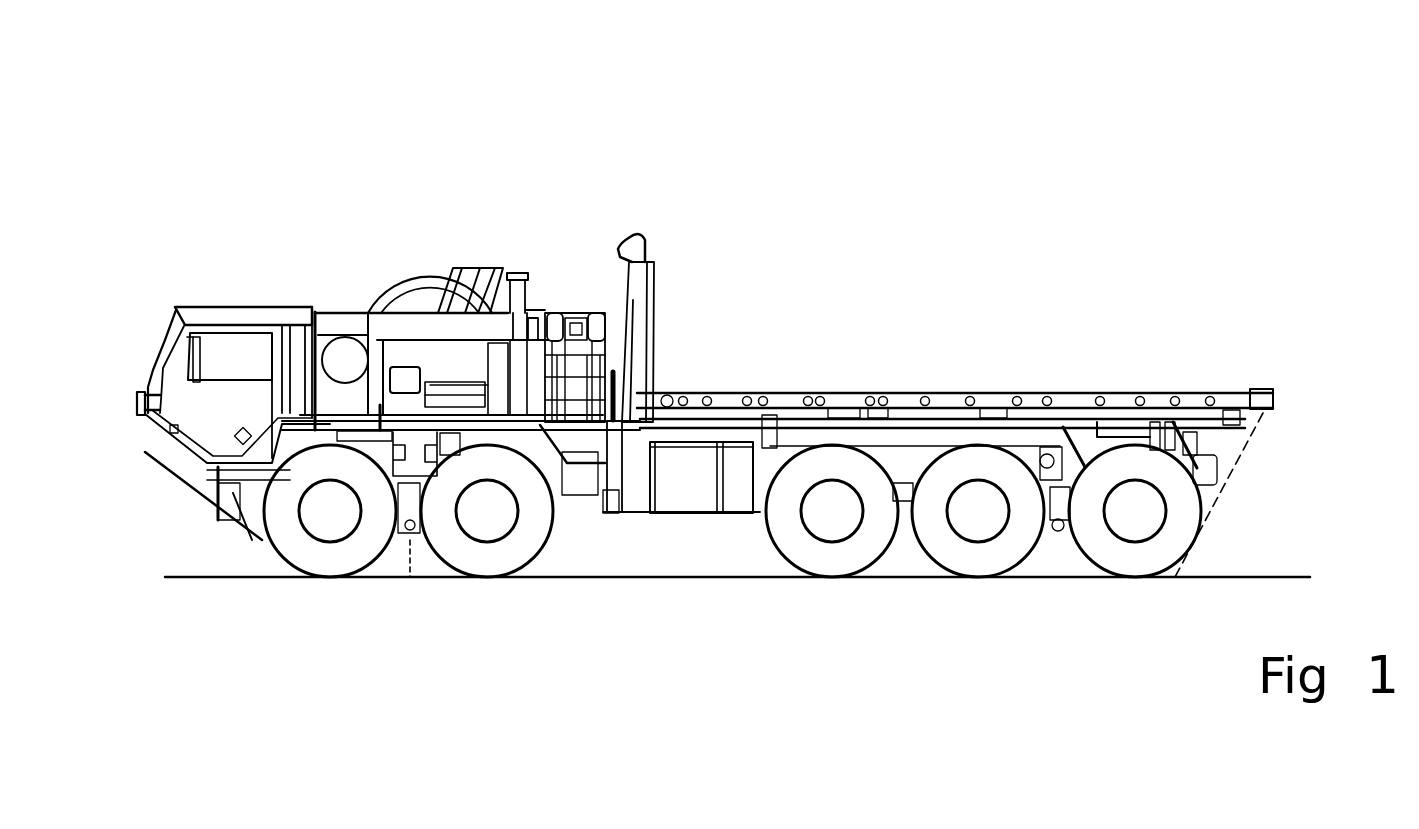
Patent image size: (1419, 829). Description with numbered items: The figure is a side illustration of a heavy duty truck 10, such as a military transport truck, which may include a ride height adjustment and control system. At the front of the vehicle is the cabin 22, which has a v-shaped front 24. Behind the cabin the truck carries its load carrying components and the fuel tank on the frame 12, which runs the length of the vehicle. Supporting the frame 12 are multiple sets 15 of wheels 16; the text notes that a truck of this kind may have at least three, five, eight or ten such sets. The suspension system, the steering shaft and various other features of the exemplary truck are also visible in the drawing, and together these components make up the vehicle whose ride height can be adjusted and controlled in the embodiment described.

The heavy duty truck 10 is at (553, 168).
The frame 12 is at (1117, 428).
The sets of wheels 15 is at (297, 585).
The wheels 16 is at (355, 552).
The cabin 22 is at (155, 360).
The v-shaped front 24 is at (137, 413).